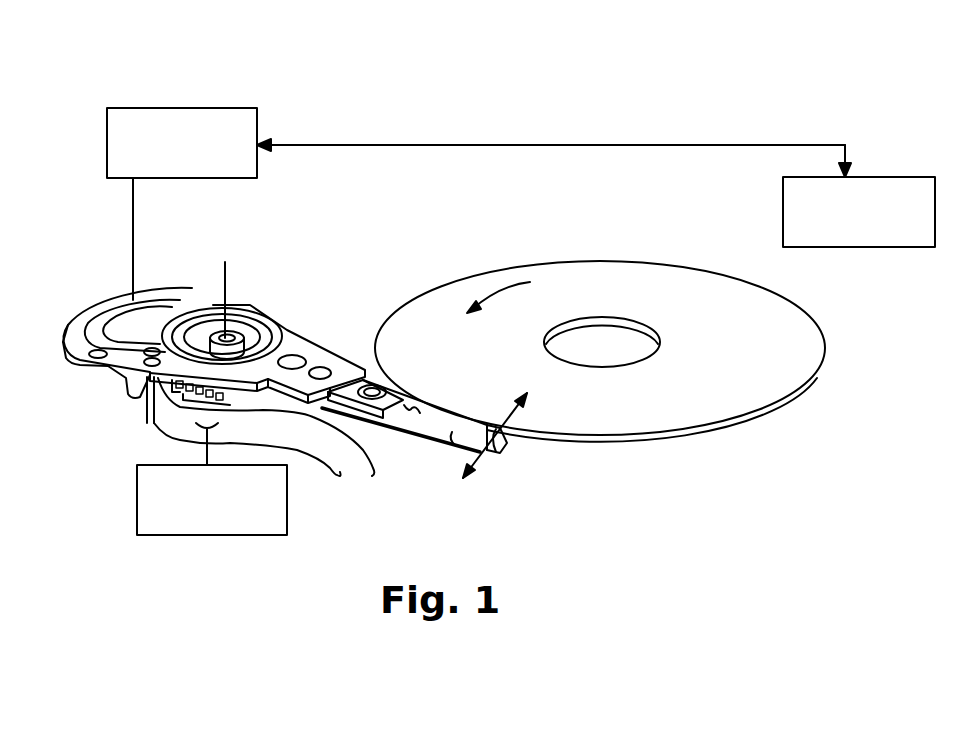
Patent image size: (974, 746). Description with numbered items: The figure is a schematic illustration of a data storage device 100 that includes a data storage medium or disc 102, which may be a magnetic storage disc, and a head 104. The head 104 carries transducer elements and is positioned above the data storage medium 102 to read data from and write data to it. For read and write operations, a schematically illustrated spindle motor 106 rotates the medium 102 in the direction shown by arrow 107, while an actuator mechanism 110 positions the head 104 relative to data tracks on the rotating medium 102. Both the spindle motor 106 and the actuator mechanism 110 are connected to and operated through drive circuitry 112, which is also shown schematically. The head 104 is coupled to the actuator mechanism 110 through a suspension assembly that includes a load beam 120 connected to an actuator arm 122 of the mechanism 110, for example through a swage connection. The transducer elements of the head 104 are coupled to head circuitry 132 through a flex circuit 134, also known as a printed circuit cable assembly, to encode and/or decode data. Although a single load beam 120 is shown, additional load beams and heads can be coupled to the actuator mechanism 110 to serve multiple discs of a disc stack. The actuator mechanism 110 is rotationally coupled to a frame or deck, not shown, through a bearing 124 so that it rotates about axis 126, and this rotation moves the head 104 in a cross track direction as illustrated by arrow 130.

The data storage device 100 is at (740, 103).
The data storage medium or disc 102 is at (702, 292).
The head 104 is at (505, 447).
The spindle motor 106 is at (898, 177).
The arrow 107 is at (493, 293).
The actuator mechanism 110 is at (247, 294).
The drive circuitry 112 is at (226, 108).
The load beam 120 is at (421, 402).
The actuator arm 122 is at (327, 338).
The bearing 124 is at (218, 334).
The axis 126 is at (220, 282).
The arrow 130 is at (510, 423).
The head circuitry 132 is at (137, 497).
The flex circuit 134 is at (272, 436).